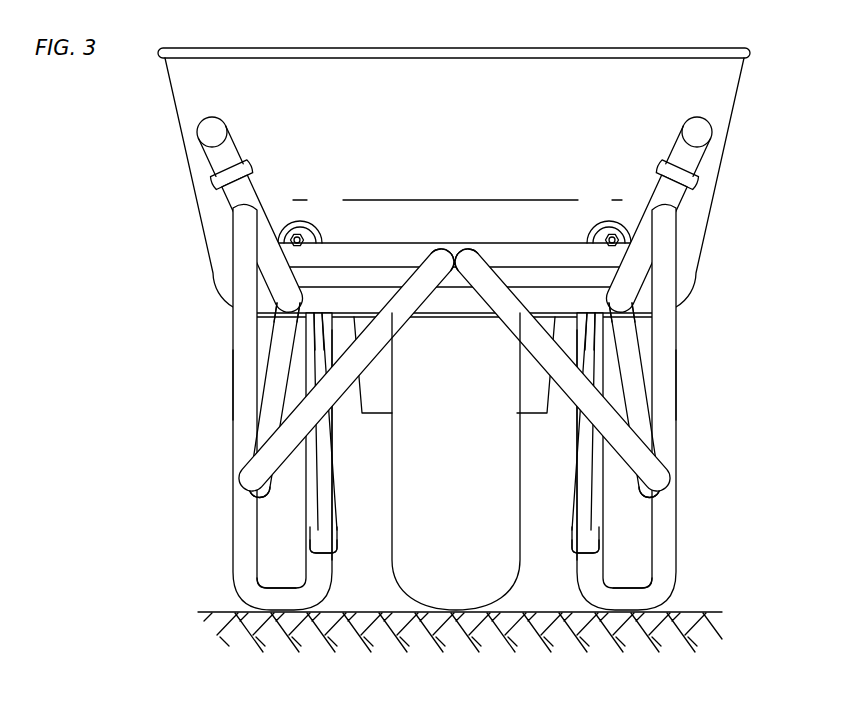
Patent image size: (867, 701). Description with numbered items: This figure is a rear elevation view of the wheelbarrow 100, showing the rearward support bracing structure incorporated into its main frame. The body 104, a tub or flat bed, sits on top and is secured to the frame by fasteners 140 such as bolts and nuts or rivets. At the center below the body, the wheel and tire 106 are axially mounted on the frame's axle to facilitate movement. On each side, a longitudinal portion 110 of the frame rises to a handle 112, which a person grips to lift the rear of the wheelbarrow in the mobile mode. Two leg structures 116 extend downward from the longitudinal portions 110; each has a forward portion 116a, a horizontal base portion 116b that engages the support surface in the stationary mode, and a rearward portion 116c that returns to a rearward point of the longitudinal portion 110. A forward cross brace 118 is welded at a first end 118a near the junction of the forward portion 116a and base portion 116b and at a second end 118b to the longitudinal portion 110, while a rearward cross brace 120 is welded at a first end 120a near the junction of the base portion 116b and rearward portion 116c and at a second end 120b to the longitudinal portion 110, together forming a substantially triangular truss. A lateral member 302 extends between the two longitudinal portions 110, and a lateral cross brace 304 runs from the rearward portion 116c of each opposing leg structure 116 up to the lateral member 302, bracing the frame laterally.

The wheelbarrow 100 is at (140, 127).
The body 104 is at (400, 42).
The wheel and tire 106 is at (473, 576).
The longitudinal portion 110 is at (250, 197).
The handle 112 is at (212, 123).
The leg structure 116 is at (233, 530).
The forward portion 116a is at (567, 437).
The base portion 116b is at (283, 588).
The rearward portion 116c is at (240, 388).
The forward cross brace 118 is at (593, 480).
The first end 118a is at (587, 532).
The second end 118b is at (600, 332).
The rearward cross brace 120 is at (273, 370).
The first end 120a is at (253, 487).
The second end 120b is at (287, 312).
The fastener 140 is at (300, 243).
The lateral member 302 is at (430, 250).
The lateral cross brace 304 is at (553, 357).